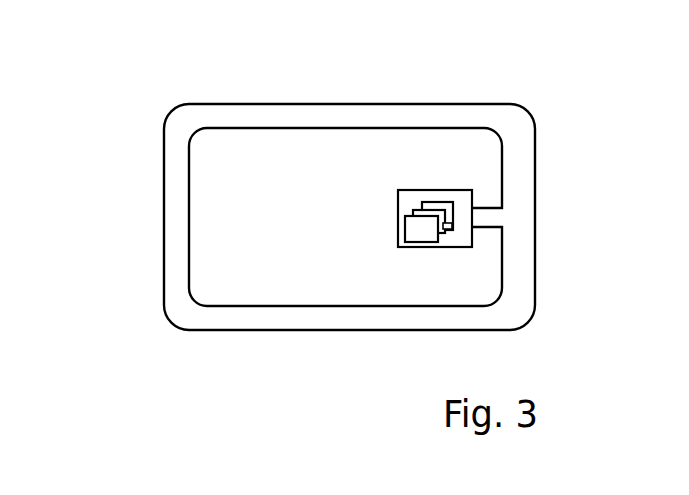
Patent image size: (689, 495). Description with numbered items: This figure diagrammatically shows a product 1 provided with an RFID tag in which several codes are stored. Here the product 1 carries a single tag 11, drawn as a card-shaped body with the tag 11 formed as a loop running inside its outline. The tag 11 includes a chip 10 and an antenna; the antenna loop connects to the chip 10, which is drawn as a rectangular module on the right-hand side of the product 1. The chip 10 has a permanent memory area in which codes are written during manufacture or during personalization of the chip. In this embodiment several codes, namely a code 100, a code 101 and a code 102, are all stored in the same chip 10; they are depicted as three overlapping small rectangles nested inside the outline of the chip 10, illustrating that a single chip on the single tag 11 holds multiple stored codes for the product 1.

The product 1 is at (123, 365).
The chip 10 is at (410, 190).
The tag 11 is at (503, 172).
The code 100 is at (418, 223).
The code 101 is at (446, 229).
The code 102 is at (450, 226).